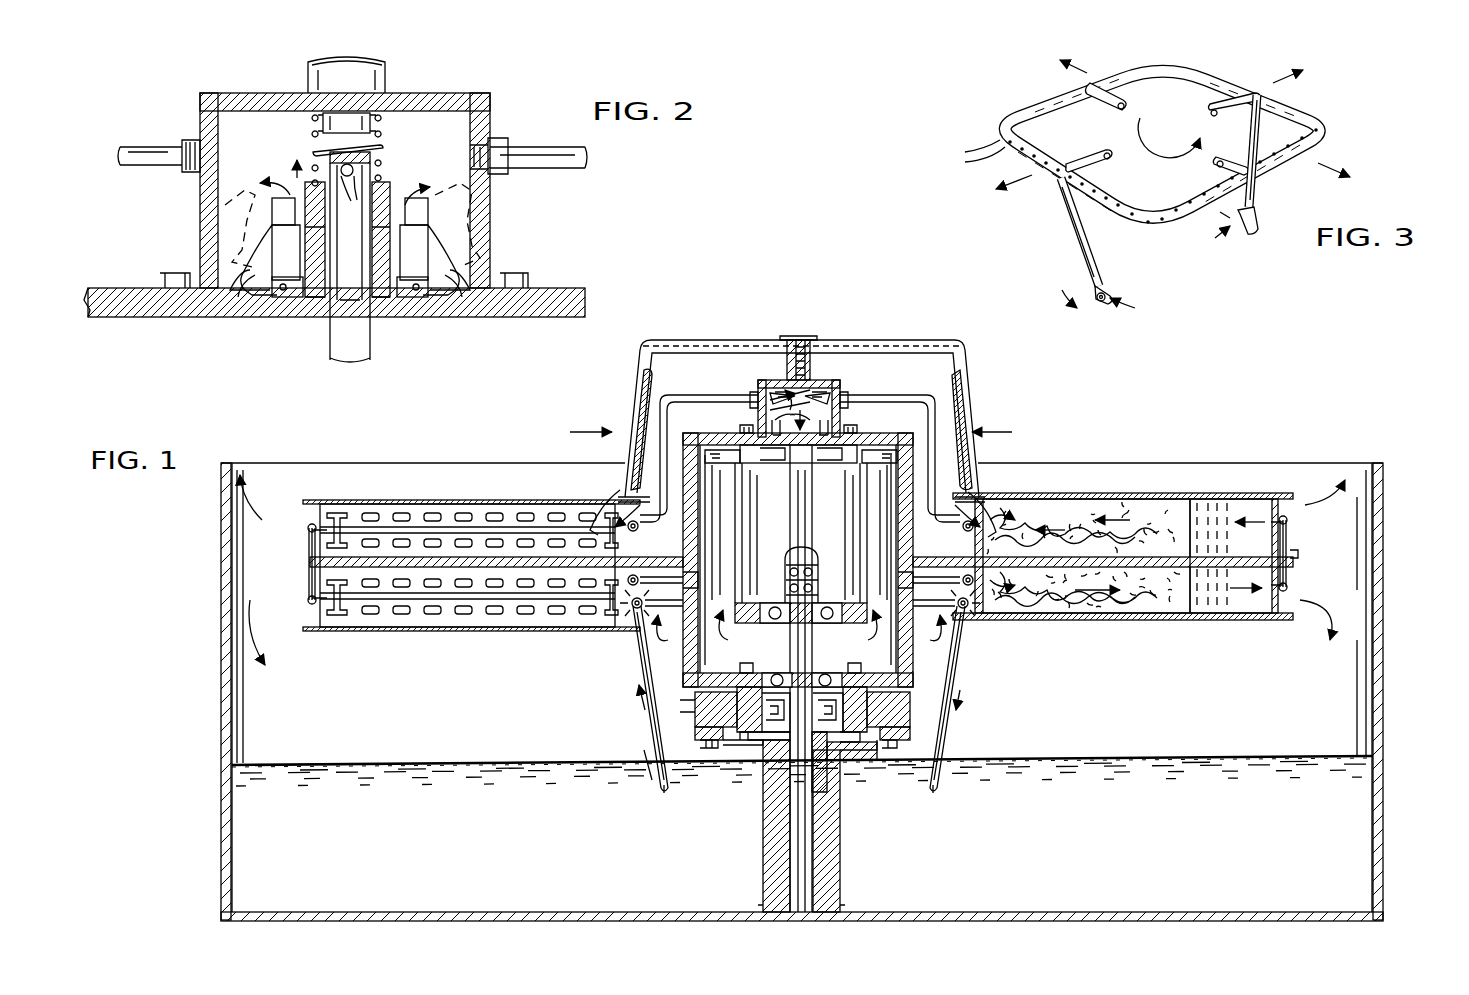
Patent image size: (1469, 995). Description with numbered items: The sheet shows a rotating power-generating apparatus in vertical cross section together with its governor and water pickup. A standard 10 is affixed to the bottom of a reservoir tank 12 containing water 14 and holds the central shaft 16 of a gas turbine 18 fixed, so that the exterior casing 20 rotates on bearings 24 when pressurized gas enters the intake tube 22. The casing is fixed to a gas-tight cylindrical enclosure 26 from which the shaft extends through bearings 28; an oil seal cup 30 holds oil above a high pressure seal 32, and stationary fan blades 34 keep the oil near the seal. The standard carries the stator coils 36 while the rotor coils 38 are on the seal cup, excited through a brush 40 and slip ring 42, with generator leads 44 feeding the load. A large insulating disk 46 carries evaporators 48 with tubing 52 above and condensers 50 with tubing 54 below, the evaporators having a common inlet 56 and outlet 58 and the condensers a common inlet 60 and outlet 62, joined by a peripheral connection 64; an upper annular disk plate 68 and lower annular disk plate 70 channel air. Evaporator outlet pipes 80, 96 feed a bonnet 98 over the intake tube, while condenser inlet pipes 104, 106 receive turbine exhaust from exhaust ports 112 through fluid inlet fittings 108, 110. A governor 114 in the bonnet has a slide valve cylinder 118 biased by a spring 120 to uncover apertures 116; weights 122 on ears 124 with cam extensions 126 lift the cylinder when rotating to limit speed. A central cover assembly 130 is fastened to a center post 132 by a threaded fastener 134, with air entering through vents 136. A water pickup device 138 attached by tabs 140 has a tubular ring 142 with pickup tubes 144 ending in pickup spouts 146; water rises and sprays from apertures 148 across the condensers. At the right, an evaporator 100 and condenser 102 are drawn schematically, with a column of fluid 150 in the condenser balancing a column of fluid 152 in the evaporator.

In FIG. 1, the standard 10 is at (765, 852).
In FIG. 1, the reservoir tank 12 is at (1385, 670).
In FIG. 1, the water 14 is at (1213, 760).
In FIG. 1, the central shaft 16 is at (808, 847).
In FIG. 1, the gas turbine 18 is at (805, 506).
In FIG. 1, the exterior casing 20 is at (735, 520).
In FIG. 2, the intake tube 22 is at (328, 344).
In FIG. 1, the intake tube 22 is at (785, 454).
In FIG. 1, the bearings 24 is at (788, 600).
In FIG. 2, the cylindrical enclosure 26 is at (565, 288).
In FIG. 1, the cylindrical enclosure 26 is at (885, 434).
In FIG. 1, the bearings 28 is at (780, 673).
In FIG. 1, the oil seal cup 30 is at (735, 745).
In FIG. 1, the high pressure seal 32 is at (865, 709).
In FIG. 1, the stationary fan blades 34 is at (775, 735).
In FIG. 1, the stator coils 36 is at (695, 705).
In FIG. 1, the rotor coils 38 is at (870, 713).
In FIG. 1, the brush 40 is at (822, 750).
In FIG. 1, the slip ring 42 is at (855, 750).
In FIG. 1, the generator leads 44 is at (697, 724).
In FIG. 1, the disk 46 is at (397, 558).
In FIG. 1, the evaporators 48 is at (484, 537).
In FIG. 1, the condensers 50 is at (478, 588).
In FIG. 1, the fluid carrying tubing 52 is at (522, 526).
In FIG. 1, the fluid carrying tubing 54 is at (535, 605).
In FIG. 1, the common inlet 56 is at (327, 513).
In FIG. 1, the common outlet 58 is at (613, 505).
In FIG. 1, the common inlet 60 is at (615, 620).
In FIG. 1, the common outlet 62 is at (330, 625).
In FIG. 1, the peripheral connection 64 is at (1293, 553).
In FIG. 1, the upper annular disk plate 68 is at (430, 500).
In FIG. 1, the lower annular disk plate 70 is at (400, 633).
In FIG. 2, the evaporator outlet pipe 80 is at (138, 151).
In FIG. 1, the evaporator outlet pipe 80 is at (683, 401).
In FIG. 2, the evaporator outlet pipe 96 is at (547, 150).
In FIG. 1, the evaporator outlet pipe 96 is at (913, 401).
In FIG. 2, the bonnet 98 is at (420, 93).
In FIG. 1, the bonnet 98 is at (767, 388).
In FIG. 1, the evaporator 100 is at (1085, 492).
In FIG. 1, the condenser 102 is at (1130, 612).
In FIG. 1, the condenser inlet pipe 104 is at (650, 615).
In FIG. 1, the condenser inlet pipe 106 is at (910, 620).
In FIG. 1, the fluid inlet fitting 108 is at (655, 580).
In FIG. 1, the fluid inlet fitting 110 is at (897, 570).
In FIG. 1, the turbine exhaust ports 112 is at (845, 606).
In FIG. 2, the governor 114 is at (280, 139).
In FIG. 1, the governor 114 is at (818, 403).
In FIG. 2, the apertures 116 is at (352, 198).
In FIG. 2, the slide valve cylinder 118 is at (305, 232).
In FIG. 2, the spring 120 is at (385, 121).
In FIG. 2, the weights 122 is at (405, 195).
In FIG. 2, the ears 124 is at (400, 300).
In FIG. 2, the cam extensions 126 is at (432, 300).
In FIG. 1, the central cover assembly 130 is at (960, 345).
In FIG. 2, the center post 132 is at (306, 78).
In FIG. 1, the center post 132 is at (783, 380).
In FIG. 1, the threaded fastener 134 is at (800, 343).
In FIG. 1, the vents 136 is at (967, 417).
In FIG. 3, the water pickup device 138 is at (1318, 98).
In FIG. 1, the water pickup device 138 is at (978, 652).
In FIG. 3, the tabs 140 is at (1098, 148).
In FIG. 3, the tubular ring 142 is at (993, 120).
In FIG. 1, the tubular ring 142 is at (967, 618).
In FIG. 3, the pickup tubes 144 is at (1070, 227).
In FIG. 1, the pickup tubes 144 is at (955, 734).
In FIG. 3, the pickup spout 146 is at (1095, 303).
In FIG. 1, the pickup spout 146 is at (937, 790).
In FIG. 3, the apertures 148 is at (967, 154).
In FIG. 1, the column of fluid 150 is at (1222, 600).
In FIG. 1, the column of fluid 152 is at (1203, 505).